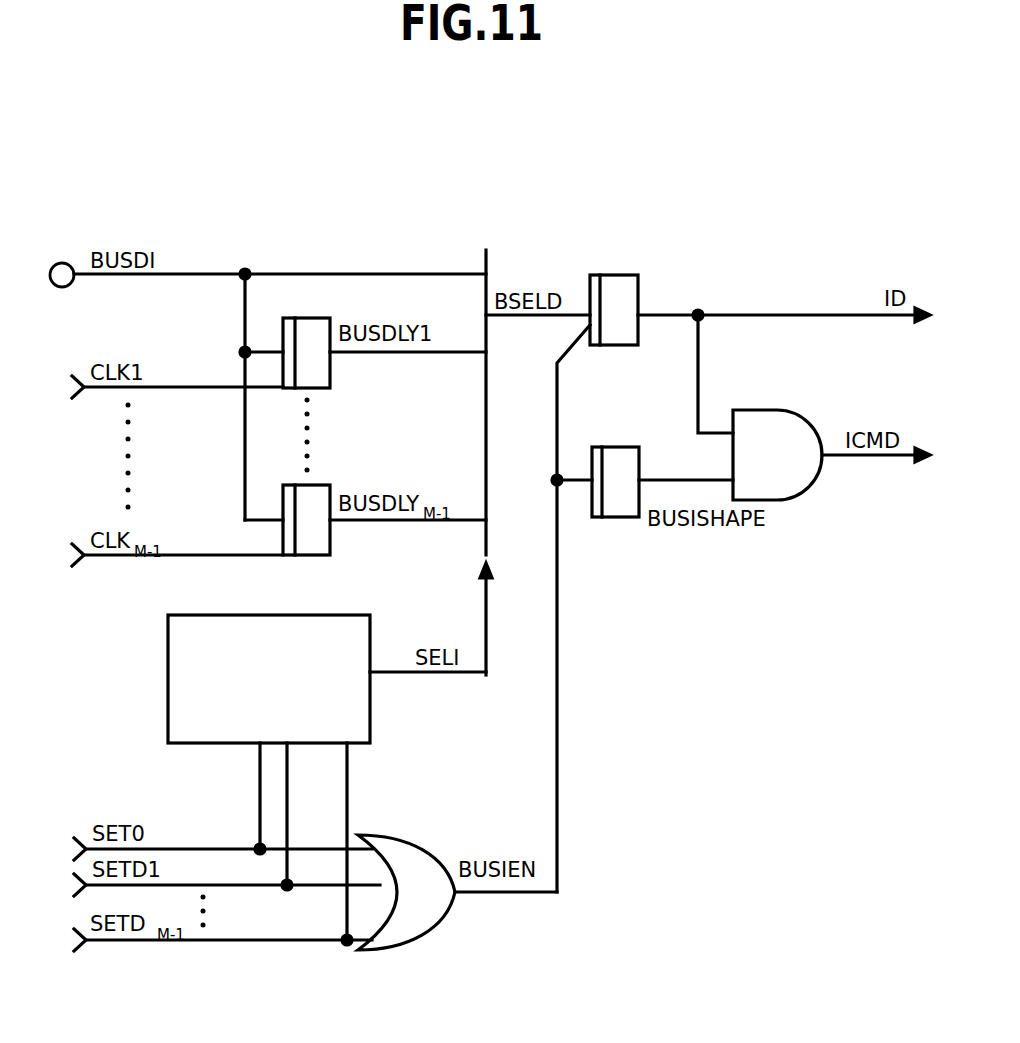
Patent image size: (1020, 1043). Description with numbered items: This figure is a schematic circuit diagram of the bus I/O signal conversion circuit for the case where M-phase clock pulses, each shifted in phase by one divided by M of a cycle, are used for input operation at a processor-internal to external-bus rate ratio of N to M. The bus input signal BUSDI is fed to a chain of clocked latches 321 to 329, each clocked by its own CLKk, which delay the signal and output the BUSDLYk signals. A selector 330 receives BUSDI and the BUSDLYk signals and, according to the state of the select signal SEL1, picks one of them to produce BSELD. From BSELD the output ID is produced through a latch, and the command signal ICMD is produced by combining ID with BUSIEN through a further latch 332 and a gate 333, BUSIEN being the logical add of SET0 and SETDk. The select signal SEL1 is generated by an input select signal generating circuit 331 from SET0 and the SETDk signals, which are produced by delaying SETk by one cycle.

The CLKk clocked latch 321 is at (322, 317).
The CLKk clocked latch 329 is at (322, 484).
The selector 330 is at (486, 248).
The input select signal generating circuit 331 is at (615, 274).
The flip-flop 332 is at (617, 446).
The AND gate / OR gate 333 is at (770, 409).